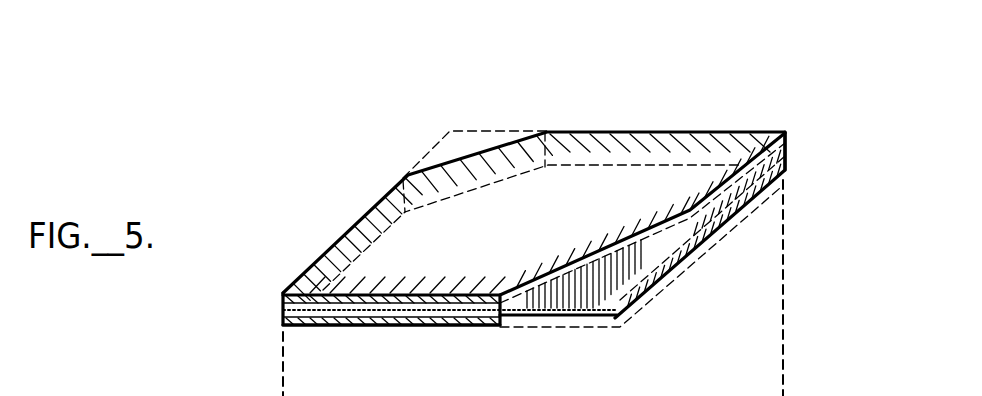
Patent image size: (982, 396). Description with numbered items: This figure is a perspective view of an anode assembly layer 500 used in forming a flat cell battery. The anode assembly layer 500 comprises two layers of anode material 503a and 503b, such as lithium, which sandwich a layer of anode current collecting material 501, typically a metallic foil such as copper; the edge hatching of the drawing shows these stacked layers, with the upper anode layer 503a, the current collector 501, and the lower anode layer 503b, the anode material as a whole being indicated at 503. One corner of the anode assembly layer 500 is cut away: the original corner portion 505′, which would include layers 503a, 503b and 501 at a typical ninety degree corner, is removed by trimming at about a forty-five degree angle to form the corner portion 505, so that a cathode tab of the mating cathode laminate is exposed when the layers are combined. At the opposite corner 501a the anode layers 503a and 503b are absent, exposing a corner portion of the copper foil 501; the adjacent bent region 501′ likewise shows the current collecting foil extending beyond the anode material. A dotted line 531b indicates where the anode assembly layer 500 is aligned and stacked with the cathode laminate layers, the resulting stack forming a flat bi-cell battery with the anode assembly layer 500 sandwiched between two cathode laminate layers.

The anode assembly layer 500 is at (387, 138).
The anode current collecting material layer 501 is at (282, 310).
The bent portion of substrate layer 501′ is at (645, 297).
The corner portion of copper foil 501a is at (563, 322).
The cover plate 503 is at (628, 142).
The anode material layer 503a is at (788, 138).
The anode material layer 503b is at (447, 330).
The corner portion 505 is at (472, 146).
The removed corner portion 505′ is at (452, 128).
The dotted line 531b is at (785, 355).